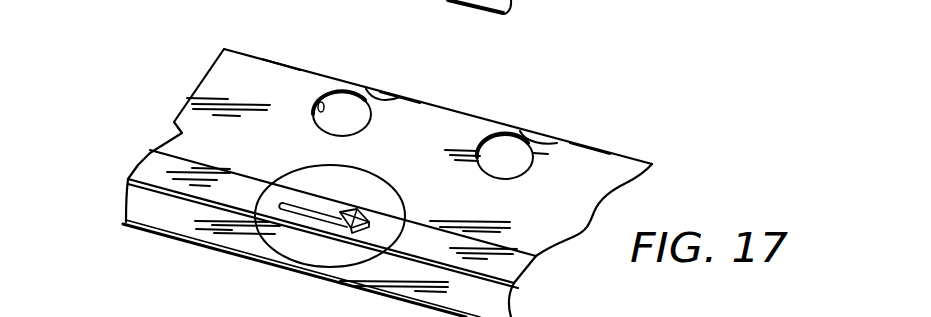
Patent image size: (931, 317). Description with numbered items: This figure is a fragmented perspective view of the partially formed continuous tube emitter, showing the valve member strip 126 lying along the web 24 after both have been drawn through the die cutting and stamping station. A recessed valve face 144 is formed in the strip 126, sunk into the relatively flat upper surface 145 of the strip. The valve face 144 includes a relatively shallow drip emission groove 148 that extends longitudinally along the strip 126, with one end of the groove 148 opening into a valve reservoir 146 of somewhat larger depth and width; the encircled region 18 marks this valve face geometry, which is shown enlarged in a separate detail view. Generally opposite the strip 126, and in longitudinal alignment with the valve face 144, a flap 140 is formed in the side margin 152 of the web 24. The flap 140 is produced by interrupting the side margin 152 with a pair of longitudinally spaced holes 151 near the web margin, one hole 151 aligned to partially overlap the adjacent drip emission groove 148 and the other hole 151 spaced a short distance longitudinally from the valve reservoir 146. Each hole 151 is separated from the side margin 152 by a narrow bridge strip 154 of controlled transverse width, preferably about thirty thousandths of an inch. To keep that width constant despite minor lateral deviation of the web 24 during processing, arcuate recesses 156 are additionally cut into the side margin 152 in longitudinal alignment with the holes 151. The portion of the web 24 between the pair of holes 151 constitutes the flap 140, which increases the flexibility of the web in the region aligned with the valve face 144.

The detail region of valve face 18 is at (274, 200).
The web 24 is at (647, 163).
The valve member strip 126 is at (152, 160).
The flap 140 is at (457, 127).
The valve face 144 is at (296, 222).
The upper surface 145 is at (384, 238).
The valve reservoir 146 is at (362, 210).
The drip emission groove 148 is at (285, 203).
The hole 151 is at (316, 93).
The side margin 152 is at (279, 56).
The bridge strip 154 is at (397, 98).
The arcuate recess 156 is at (368, 94).